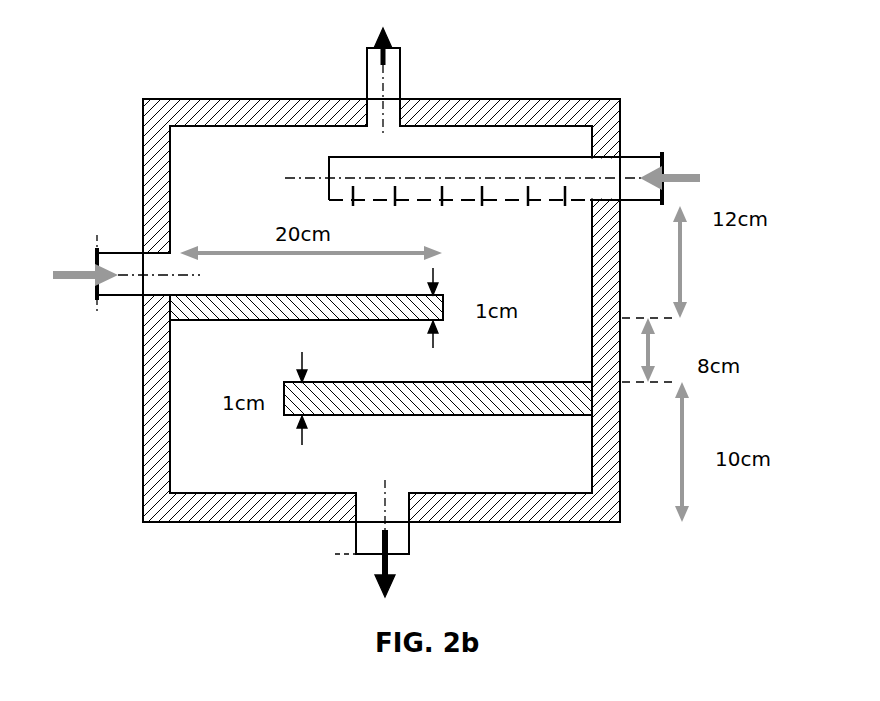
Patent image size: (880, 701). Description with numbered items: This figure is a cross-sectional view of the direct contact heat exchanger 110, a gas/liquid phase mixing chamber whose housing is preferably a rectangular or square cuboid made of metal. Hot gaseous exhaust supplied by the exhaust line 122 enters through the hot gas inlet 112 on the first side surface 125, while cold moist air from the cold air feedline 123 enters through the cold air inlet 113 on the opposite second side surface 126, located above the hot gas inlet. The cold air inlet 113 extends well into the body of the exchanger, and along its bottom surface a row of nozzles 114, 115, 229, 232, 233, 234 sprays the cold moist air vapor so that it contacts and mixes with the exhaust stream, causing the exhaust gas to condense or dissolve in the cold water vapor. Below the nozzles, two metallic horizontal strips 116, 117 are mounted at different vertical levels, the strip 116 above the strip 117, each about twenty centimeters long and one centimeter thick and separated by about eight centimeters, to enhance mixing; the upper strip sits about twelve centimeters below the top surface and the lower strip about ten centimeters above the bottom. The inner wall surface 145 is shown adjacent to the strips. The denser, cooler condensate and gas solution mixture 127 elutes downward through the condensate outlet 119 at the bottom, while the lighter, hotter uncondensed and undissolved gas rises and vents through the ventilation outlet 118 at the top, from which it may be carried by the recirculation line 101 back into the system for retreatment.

The recirculation line 101 is at (392, 46).
The direct contact heat exchanger 110 is at (520, 100).
The hot gas inlet 112 is at (110, 258).
The cold air inlet 113 is at (667, 160).
The nozzle 114 is at (345, 207).
The nozzle 115 is at (395, 206).
The horizontal strip 116 is at (215, 321).
The horizontal strip 117 is at (458, 395).
The ventilation outlet 118 is at (392, 80).
The condensate outlet 119 is at (410, 548).
The exhaust line 122 is at (67, 280).
The cold air feedline 123 is at (647, 202).
The first side surface 125 is at (140, 130).
The second side surface 126 is at (623, 119).
The condensate and gas solution mixture 127 is at (373, 573).
The inner wall surface 145 is at (627, 291).
The nozzle 229 is at (565, 206).
The nozzle 232 is at (528, 206).
The nozzle opening 233 is at (482, 206).
The nozzle opening 234 is at (442, 206).